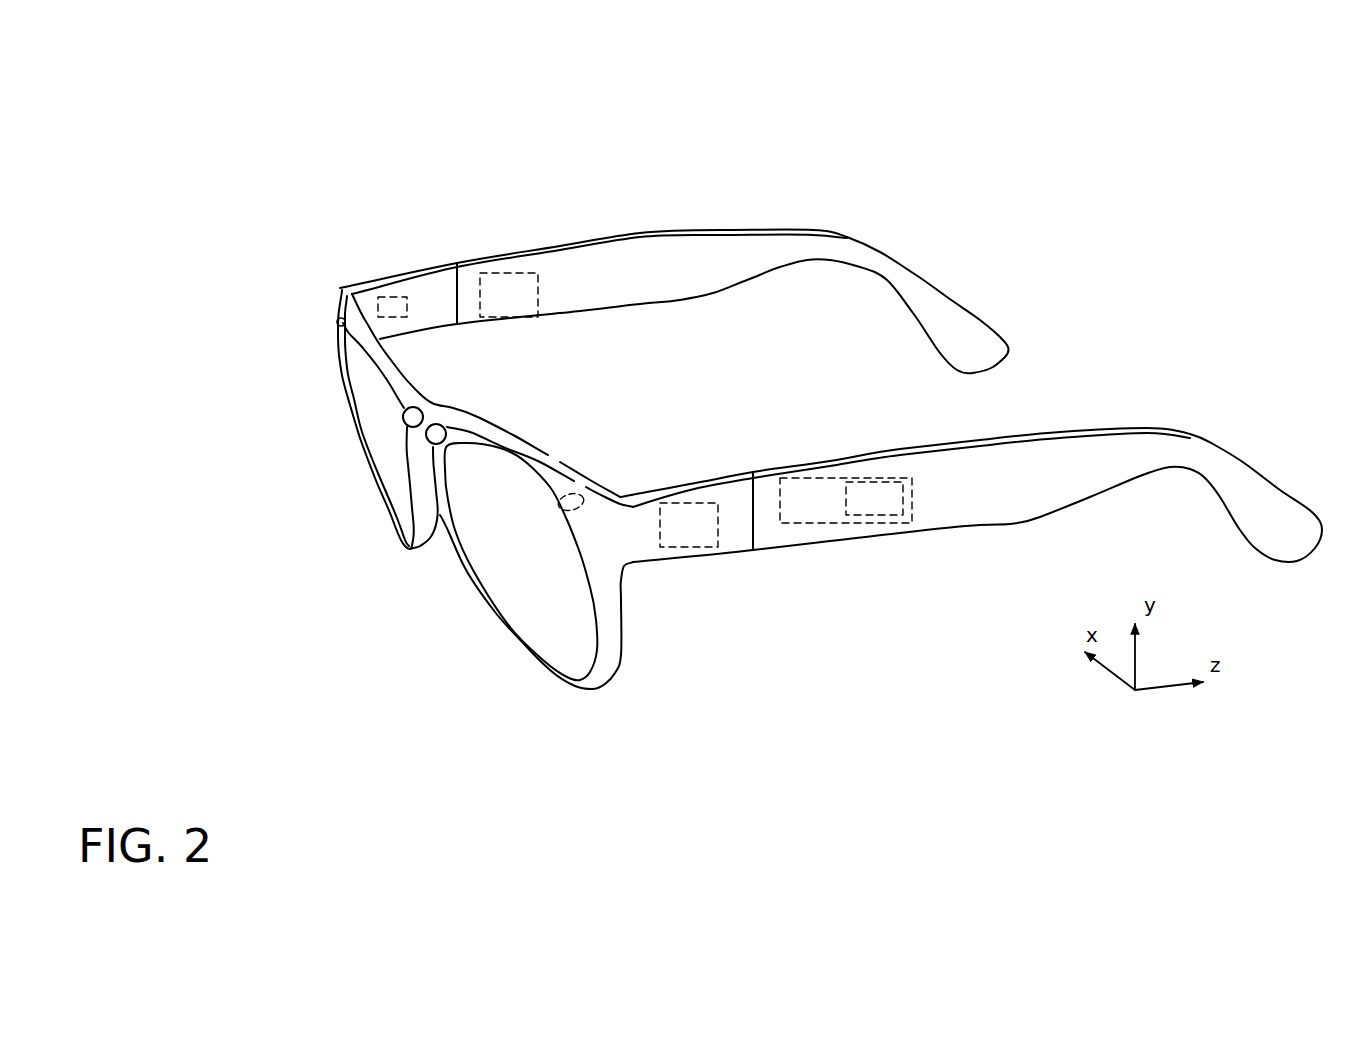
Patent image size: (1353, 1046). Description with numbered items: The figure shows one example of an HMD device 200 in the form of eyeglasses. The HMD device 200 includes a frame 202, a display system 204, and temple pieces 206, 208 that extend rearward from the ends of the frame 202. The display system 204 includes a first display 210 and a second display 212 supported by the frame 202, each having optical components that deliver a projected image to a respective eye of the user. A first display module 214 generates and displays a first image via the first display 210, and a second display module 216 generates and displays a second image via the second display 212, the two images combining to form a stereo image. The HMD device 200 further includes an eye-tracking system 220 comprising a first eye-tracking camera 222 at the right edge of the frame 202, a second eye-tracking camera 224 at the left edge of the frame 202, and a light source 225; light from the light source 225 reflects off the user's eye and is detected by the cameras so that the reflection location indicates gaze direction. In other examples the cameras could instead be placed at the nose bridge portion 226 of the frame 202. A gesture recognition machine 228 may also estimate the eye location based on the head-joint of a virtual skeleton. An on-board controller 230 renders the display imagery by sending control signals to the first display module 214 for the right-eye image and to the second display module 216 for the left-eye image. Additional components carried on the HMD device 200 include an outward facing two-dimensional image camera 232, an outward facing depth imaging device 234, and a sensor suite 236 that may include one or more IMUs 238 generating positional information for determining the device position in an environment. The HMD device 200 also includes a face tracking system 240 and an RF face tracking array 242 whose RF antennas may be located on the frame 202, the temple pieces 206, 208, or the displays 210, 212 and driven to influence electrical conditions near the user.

The HMD device 200 is at (313, 117).
The frame 202 is at (620, 653).
The display system 204 is at (244, 466).
The temple piece 206 is at (622, 290).
The temple piece 208 is at (1044, 487).
The first display 210 is at (363, 387).
The second display 212 is at (554, 575).
The first display module 214 is at (387, 510).
The second display module 216 is at (522, 638).
The eye-tracking system 220 is at (483, 338).
The first eye-tracking camera 222 is at (338, 320).
The second eye-tracking camera 224 is at (575, 495).
The light source 225 is at (438, 402).
The nose bridge portion 226 is at (438, 552).
The gesture recognition machine 228 is at (390, 296).
The controller 230 is at (714, 535).
The outward facing two-dimensional image camera 232 is at (405, 413).
The outward facing depth imaging device 234 is at (432, 438).
The sensor suite 236 is at (832, 512).
The IMU 238 is at (894, 512).
The face tracking system 240 is at (534, 305).
The RF face tracking array 242 is at (553, 200).